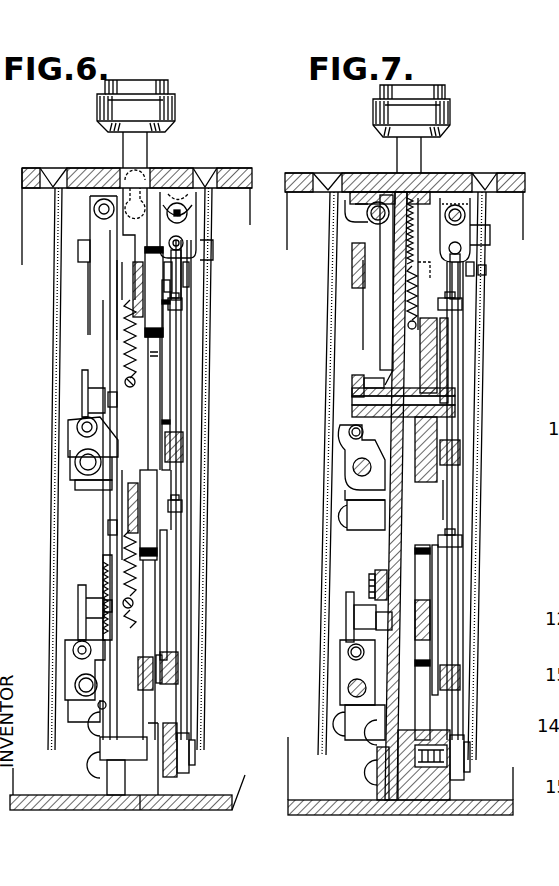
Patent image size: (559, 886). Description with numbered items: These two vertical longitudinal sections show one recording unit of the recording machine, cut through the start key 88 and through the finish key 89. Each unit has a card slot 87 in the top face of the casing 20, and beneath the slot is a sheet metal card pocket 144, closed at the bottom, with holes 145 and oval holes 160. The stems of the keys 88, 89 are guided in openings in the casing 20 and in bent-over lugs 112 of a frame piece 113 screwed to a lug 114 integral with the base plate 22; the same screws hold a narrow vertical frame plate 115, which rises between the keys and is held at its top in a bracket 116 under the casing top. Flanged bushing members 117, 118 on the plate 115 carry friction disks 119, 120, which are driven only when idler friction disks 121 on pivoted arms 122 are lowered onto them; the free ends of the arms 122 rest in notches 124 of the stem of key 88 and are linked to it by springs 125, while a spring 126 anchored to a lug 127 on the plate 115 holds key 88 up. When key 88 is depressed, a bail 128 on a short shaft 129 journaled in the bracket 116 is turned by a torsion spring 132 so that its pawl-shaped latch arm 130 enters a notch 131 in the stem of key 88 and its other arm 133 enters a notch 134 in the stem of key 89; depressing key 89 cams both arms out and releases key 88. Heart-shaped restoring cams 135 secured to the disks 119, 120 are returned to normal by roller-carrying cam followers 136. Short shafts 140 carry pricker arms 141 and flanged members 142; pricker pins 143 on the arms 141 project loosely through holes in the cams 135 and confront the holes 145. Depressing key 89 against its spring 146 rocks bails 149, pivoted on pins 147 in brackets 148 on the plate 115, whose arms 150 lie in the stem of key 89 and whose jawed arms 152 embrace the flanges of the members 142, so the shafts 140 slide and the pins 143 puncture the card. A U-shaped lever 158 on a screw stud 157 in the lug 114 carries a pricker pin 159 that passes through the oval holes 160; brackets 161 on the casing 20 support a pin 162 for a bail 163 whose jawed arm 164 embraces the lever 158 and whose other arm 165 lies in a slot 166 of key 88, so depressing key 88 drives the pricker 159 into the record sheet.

In FIG. 6, the casing 20 is at (242, 178).
In FIG. 6, the base plate 22 is at (53, 795).
In FIG. 7, the base plate 22 is at (330, 800).
In FIG. 6, the slot 87 is at (55, 176).
In FIG. 7, the slot 87 is at (340, 163).
In FIG. 6, the key 88 is at (113, 105).
In FIG. 7, the key 89 is at (447, 124).
In FIG. 6, the bent-over lugs 112 is at (143, 737).
In FIG. 6, the frame piece 113 is at (110, 745).
In FIG. 7, the frame piece 113 is at (377, 757).
In FIG. 6, the lug 114 is at (143, 777).
In FIG. 7, the lug 114 is at (413, 777).
In FIG. 6, the frame plate 115 is at (113, 786).
In FIG. 7, the frame plate 115 is at (390, 543).
In FIG. 6, the bracket 116 is at (120, 178).
In FIG. 7, the member 117 is at (390, 348).
In FIG. 7, the member 118 is at (383, 585).
In FIG. 6, the friction disk 119 is at (152, 347).
In FIG. 7, the friction disk 119 is at (455, 330).
In FIG. 6, the friction disk 120 is at (150, 560).
In FIG. 7, the friction disk 120 is at (430, 580).
In FIG. 6, the idler friction disks 121 is at (140, 292).
In FIG. 6, the arms 122 is at (133, 275).
In FIG. 6, the notches 124 is at (127, 368).
In FIG. 6, the springs 125 is at (122, 355).
In FIG. 6, the spring 126 is at (85, 655).
In FIG. 6, the lug 127 is at (112, 568).
In FIG. 7, the lug 127 is at (380, 577).
In FIG. 6, the bail 128 is at (82, 257).
In FIG. 7, the bail 128 is at (352, 262).
In FIG. 6, the short shaft 129 is at (97, 209).
In FIG. 7, the short shaft 129 is at (362, 210).
In FIG. 6, the latch arm 130 is at (90, 320).
In FIG. 6, the notch 131 is at (127, 357).
In FIG. 7, the torsion spring 132 is at (397, 182).
In FIG. 7, the arm 133 is at (370, 357).
In FIG. 7, the notch 134 is at (340, 403).
In FIG. 6, the restoring cams 135 is at (172, 332).
In FIG. 7, the restoring cams 135 is at (452, 350).
In FIG. 6, the cam followers 136 is at (185, 449).
In FIG. 7, the cam followers 136 is at (453, 442).
In FIG. 6, the short shafts 140 is at (80, 447).
In FIG. 7, the short shafts 140 is at (443, 400).
In FIG. 6, the pricker arms 141 is at (182, 355).
In FIG. 7, the pricker arms 141 is at (460, 366).
In FIG. 6, the flanged members 142 is at (82, 392).
In FIG. 7, the flanged members 142 is at (352, 383).
In FIG. 6, the pricker pins 143 is at (187, 312).
In FIG. 7, the pricker pins 143 is at (460, 310).
In FIG. 6, the card pocket 144 is at (195, 243).
In FIG. 7, the card pocket 144 is at (485, 250).
In FIG. 6, the holes 145 is at (203, 398).
In FIG. 7, the holes 145 is at (480, 475).
In FIG. 7, the spring 146 is at (423, 272).
In FIG. 6, the pins 147 is at (87, 472).
In FIG. 7, the pins 147 is at (352, 467).
In FIG. 7, the brackets 148 is at (393, 538).
In FIG. 6, the bails 149 is at (75, 460).
In FIG. 7, the bails 149 is at (340, 480).
In FIG. 7, the arm 150 is at (343, 437).
In FIG. 6, the arm 152 is at (75, 658).
In FIG. 7, the arm 152 is at (345, 447).
In FIG. 6, the screw stud 157 is at (190, 760).
In FIG. 7, the screw stud 157 is at (468, 770).
In FIG. 6, the lever 158 is at (180, 480).
In FIG. 7, the lever 158 is at (443, 505).
In FIG. 6, the pricker pin 159 is at (200, 262).
In FIG. 7, the pricker pin 159 is at (482, 273).
In FIG. 6, the oval holes 160 is at (200, 272).
In FIG. 6, the brackets 161 is at (175, 192).
In FIG. 6, the pin 162 is at (183, 213).
In FIG. 7, the pin 162 is at (467, 220).
In FIG. 7, the bail 163 is at (457, 205).
In FIG. 6, the arm 164 is at (213, 247).
In FIG. 7, the arm 164 is at (492, 240).
In FIG. 6, the arm 165 is at (178, 193).
In FIG. 6, the slot 166 is at (147, 197).
In FIG. 7, the slot 166 is at (490, 272).